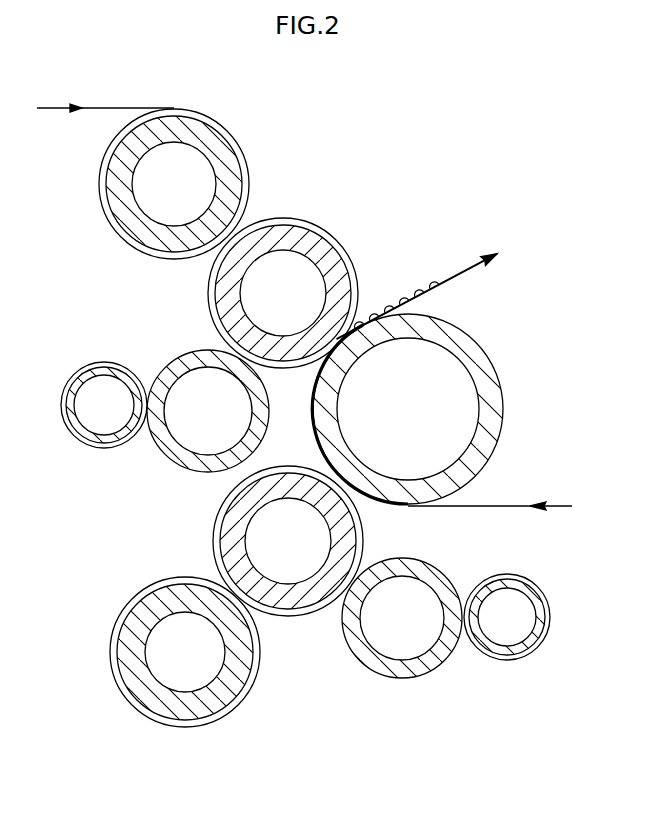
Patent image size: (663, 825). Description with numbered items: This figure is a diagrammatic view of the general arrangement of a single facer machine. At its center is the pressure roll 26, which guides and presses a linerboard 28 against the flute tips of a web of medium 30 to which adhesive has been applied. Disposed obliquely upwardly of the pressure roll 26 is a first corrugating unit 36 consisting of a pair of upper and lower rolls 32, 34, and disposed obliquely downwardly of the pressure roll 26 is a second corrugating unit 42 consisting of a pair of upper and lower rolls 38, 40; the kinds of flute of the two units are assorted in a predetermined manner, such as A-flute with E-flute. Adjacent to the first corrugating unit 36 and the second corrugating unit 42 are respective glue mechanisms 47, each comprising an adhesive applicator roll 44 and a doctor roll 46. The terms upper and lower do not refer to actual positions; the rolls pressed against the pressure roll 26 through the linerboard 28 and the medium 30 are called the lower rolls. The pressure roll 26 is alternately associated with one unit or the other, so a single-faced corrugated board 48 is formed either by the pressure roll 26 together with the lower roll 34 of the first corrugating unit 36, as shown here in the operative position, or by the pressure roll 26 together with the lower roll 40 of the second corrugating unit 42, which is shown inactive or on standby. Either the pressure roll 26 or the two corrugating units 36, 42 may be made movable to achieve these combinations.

The pressure roll 26 is at (490, 389).
The linerboard 28 is at (560, 508).
The web of medium 30 is at (50, 110).
The upper roll 32 is at (233, 152).
The lower roll 34 is at (318, 240).
The first corrugating unit 36 is at (321, 106).
The upper roll 38 is at (228, 693).
The lower roll 40 is at (300, 605).
The second corrugating unit 42 is at (342, 706).
The adhesive applicator roll 44 is at (197, 353).
The doctor roll 46 is at (83, 375).
The glue mechanism 47 is at (142, 358).
The single-faced corrugated board 48 is at (423, 287).